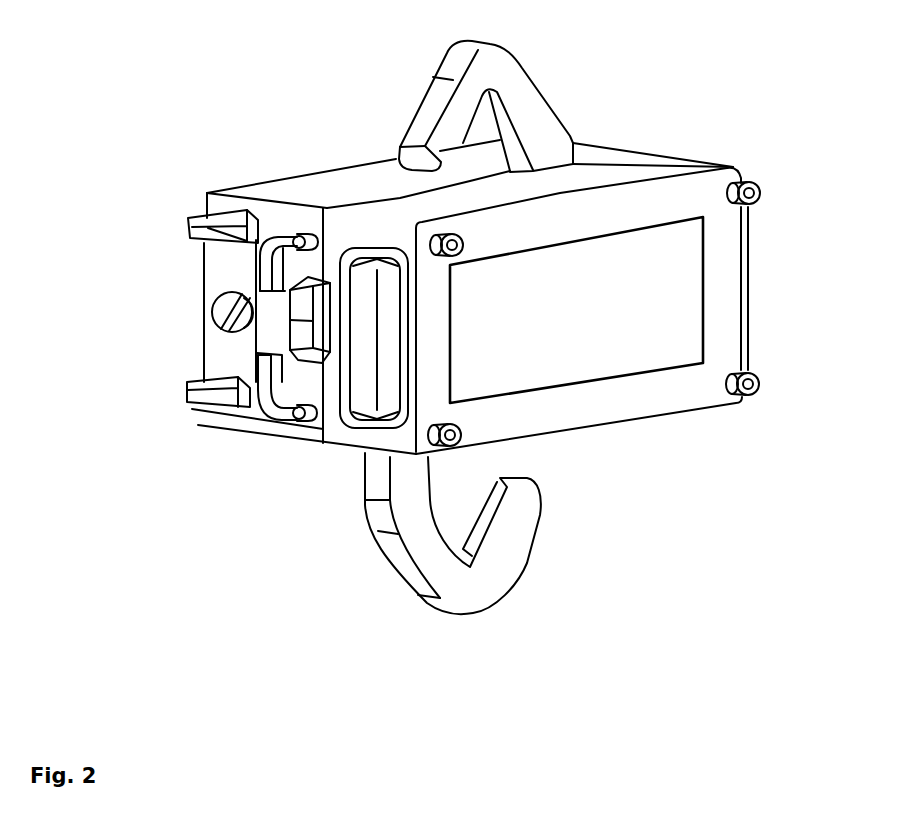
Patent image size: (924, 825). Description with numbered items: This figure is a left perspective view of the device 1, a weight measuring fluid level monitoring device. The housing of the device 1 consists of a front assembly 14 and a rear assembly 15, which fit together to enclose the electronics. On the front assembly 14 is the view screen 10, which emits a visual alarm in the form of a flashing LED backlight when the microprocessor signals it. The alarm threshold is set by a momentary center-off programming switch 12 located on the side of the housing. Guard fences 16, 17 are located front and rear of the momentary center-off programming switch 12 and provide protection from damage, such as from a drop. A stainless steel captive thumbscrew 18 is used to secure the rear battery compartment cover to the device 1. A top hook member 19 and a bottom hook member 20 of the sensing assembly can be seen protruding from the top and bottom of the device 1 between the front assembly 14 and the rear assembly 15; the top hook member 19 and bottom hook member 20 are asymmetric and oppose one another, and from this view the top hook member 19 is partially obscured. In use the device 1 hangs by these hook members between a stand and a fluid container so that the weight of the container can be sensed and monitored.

The device 1 is at (640, 153).
The view screen 10 is at (682, 314).
The momentary center-off programming switch 12 is at (295, 236).
The front assembly 14 is at (730, 163).
The rear assembly 15 is at (365, 174).
The guard fence 16 is at (320, 370).
The guard fence 17 is at (206, 221).
The captive thumbscrew 18 is at (217, 309).
The top hook member 19 is at (522, 87).
The bottom hook member 20 is at (492, 594).